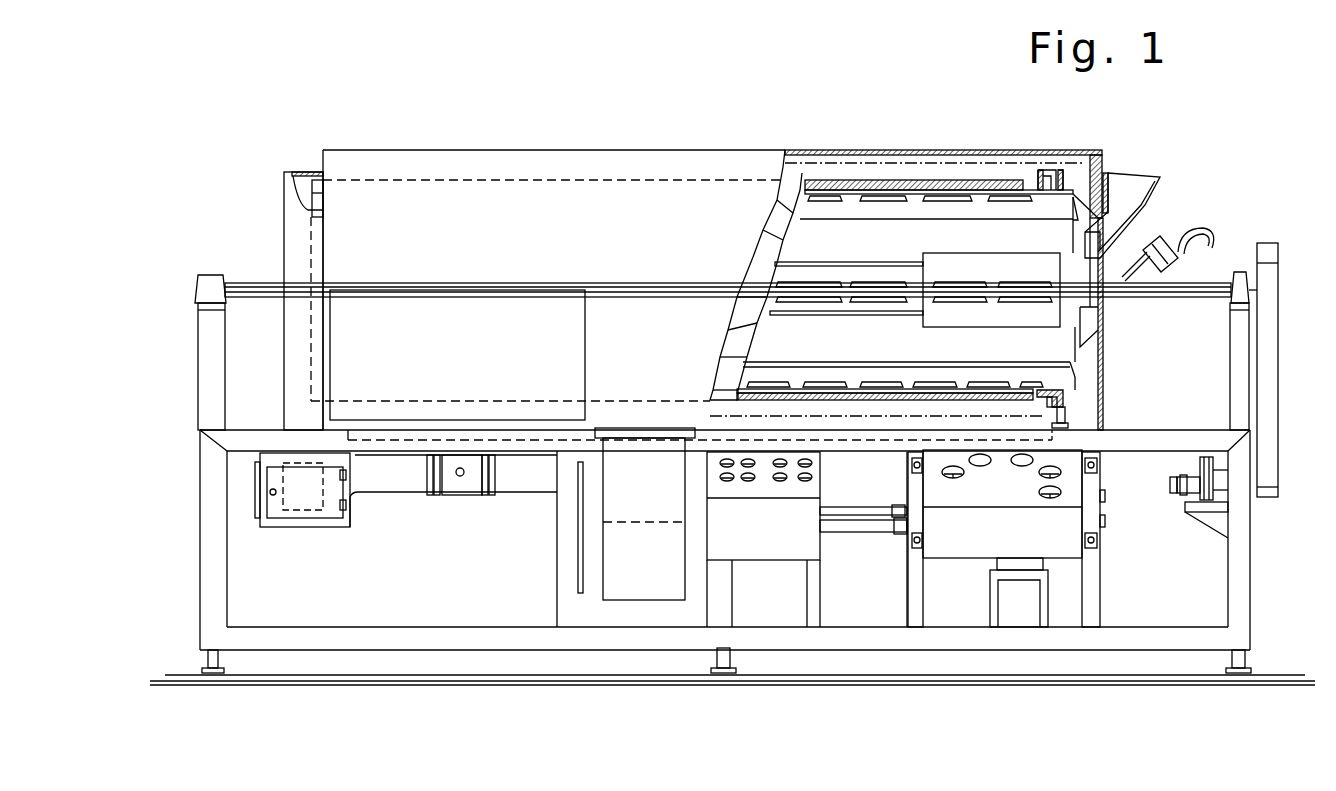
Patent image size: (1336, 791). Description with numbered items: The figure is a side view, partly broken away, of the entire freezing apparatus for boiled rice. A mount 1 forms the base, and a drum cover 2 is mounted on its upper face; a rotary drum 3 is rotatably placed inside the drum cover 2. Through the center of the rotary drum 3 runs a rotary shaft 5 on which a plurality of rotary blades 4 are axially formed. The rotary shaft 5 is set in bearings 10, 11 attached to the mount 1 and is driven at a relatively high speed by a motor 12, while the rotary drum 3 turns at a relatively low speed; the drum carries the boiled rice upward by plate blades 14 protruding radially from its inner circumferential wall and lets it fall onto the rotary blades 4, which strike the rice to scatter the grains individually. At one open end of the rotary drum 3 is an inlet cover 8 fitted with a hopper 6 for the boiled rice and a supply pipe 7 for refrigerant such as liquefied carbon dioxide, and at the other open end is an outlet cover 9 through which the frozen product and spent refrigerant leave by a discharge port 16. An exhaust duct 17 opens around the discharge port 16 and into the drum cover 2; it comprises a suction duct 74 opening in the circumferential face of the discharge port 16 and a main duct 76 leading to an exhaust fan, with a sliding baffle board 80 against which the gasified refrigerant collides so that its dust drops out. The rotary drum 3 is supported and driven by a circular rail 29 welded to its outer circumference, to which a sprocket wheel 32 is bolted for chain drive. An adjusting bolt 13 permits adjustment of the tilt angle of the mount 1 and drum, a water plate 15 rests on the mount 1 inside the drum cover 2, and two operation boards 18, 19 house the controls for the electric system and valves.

The mount 1 is at (1246, 565).
The drum cover 2 is at (845, 150).
The rotary drum 3 is at (803, 175).
The rotary blades 4 is at (828, 272).
The rotary shaft 5 is at (1203, 297).
The hopper 6 is at (1140, 193).
The supply pipe 7 is at (1140, 270).
The inlet cover 8 is at (1103, 350).
The outlet cover 9 is at (284, 228).
The bearing 10 is at (212, 282).
The bearing 11 is at (1240, 272).
The motor 12 is at (1200, 468).
The adjusting bolt 13 is at (208, 658).
The plate blades 14 is at (990, 205).
The water plate 15 is at (883, 440).
The discharge port 16 is at (305, 512).
The exhaust duct 17 is at (510, 483).
The operation board 18 is at (812, 485).
The operation board 19 is at (998, 495).
The circular rail 29 is at (1045, 392).
The sprocket wheel 32 is at (1065, 400).
The suction duct 74 is at (385, 483).
The main duct 76 is at (673, 495).
The baffle board 80 is at (578, 572).